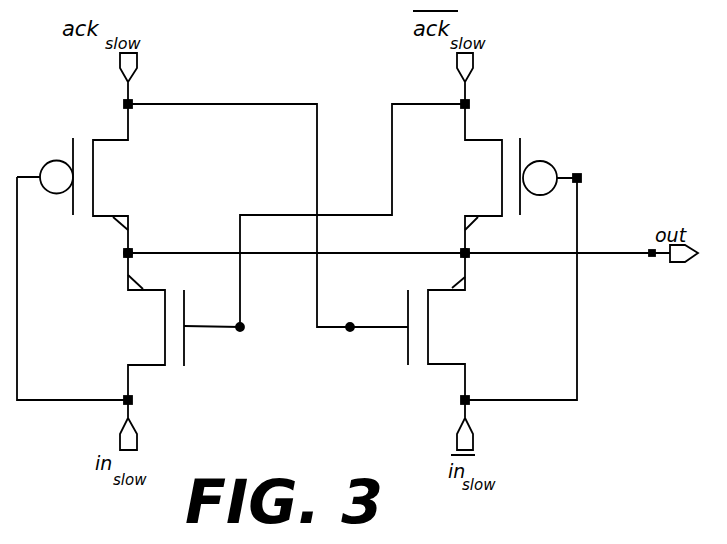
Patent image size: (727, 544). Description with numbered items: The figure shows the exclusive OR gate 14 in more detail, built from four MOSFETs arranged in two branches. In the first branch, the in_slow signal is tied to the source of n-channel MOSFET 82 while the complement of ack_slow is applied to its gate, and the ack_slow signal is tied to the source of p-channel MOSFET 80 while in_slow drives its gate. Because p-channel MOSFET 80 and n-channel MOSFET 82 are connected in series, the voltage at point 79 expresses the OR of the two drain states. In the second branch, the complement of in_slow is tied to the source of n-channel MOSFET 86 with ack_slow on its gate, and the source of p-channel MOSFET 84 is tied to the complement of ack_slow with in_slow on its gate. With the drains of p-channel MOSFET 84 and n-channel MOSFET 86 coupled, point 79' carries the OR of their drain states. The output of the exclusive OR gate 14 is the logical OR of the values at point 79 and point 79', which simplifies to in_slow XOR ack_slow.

The exclusive OR gate 14 is at (311, 70).
The p-channel MOSFET 80 is at (93, 178).
The point 79 is at (158, 240).
The n-channel MOSFET 82 is at (165, 326).
The p-channel MOSFET 84 is at (502, 172).
The point 79' is at (498, 240).
The n-channel MOSFET 86 is at (428, 332).